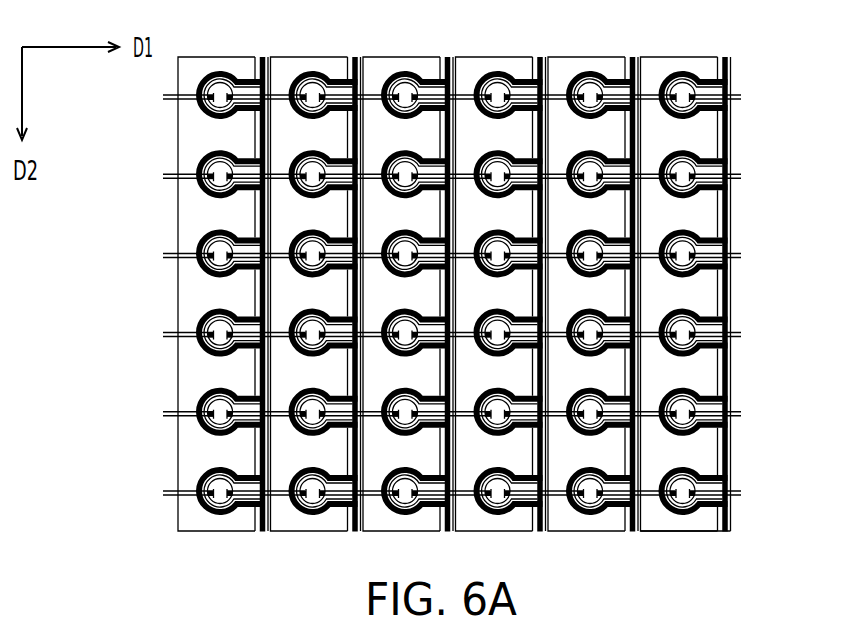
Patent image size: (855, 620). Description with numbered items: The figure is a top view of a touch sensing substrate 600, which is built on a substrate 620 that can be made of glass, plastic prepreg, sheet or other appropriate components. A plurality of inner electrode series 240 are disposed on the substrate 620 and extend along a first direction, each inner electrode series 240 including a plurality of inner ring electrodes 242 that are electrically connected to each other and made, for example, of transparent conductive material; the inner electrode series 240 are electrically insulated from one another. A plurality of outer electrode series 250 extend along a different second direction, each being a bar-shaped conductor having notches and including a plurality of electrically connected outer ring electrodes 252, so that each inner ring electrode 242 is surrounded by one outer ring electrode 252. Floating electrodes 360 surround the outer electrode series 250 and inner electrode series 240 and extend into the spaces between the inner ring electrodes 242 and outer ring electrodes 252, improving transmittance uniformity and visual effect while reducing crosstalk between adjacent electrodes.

The touch sensing substrate 600 is at (456, 288).
The outer electrode series 250 is at (700, 56).
The outer ring electrodes 252 is at (712, 65).
The floating electrodes 360 is at (732, 75).
The inner electrode series 240 is at (748, 97).
The inner ring electrodes 242 is at (700, 120).
The substrate 620 is at (700, 532).